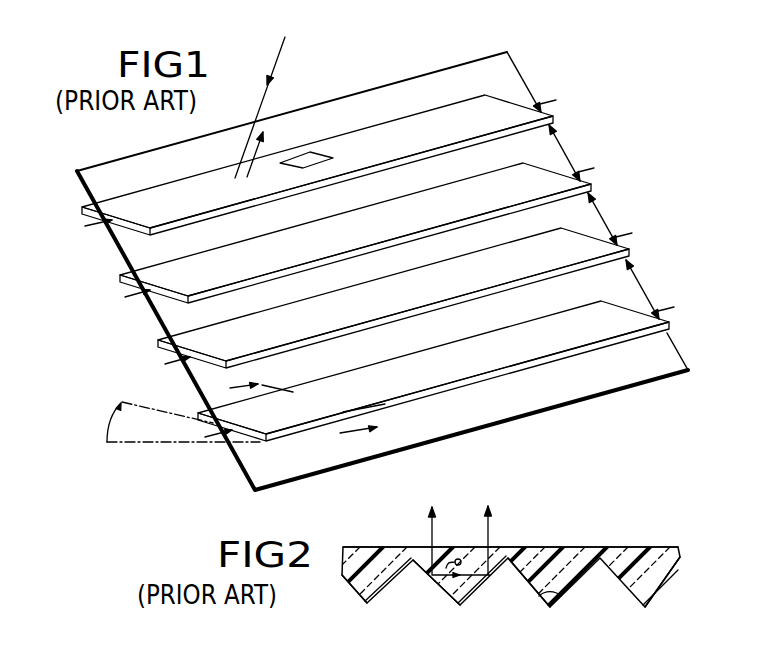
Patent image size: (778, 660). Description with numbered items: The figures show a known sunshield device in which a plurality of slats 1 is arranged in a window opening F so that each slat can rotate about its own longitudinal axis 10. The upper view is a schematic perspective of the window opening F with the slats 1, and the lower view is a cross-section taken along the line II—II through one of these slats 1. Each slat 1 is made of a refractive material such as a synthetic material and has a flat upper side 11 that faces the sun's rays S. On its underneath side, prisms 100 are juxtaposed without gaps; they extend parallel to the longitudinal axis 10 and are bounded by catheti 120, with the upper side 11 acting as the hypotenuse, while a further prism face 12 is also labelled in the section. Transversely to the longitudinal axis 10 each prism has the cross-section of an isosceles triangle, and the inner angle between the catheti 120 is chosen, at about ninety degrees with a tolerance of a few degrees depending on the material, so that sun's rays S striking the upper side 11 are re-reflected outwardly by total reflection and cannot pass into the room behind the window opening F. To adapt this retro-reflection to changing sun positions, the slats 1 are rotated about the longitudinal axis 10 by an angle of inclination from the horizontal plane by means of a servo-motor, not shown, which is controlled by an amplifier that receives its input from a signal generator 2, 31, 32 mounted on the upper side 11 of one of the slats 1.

In FIG. 1, the slat 1 is at (503, 350).
In FIG. 2, the slat 1 is at (342, 585).
In FIG. 1, the flat upper side 11 is at (370, 385).
In FIG. 2, the flat upper side 11 is at (608, 547).
In FIG. 1, the longitudinal axis 10 is at (620, 238).
In FIG. 2, the longitudinal axis 10 is at (445, 567).
In FIG. 2, the second face of sawtooth groove 12 is at (521, 587).
In FIG. 2, the prisms 100 is at (570, 587).
In FIG. 2, the catheti 120 is at (672, 580).
In FIG. 1, the signal generator 2 is at (315, 114).
In FIG. 1, the signal generator 31 is at (315, 114).
In FIG. 1, the signal generator 32 is at (310, 157).
In FIG. 1, the sun's rays S is at (264, 93).
In FIG. 1, the window opening F is at (500, 77).
In FIG. 1, the section line II is at (296, 413).